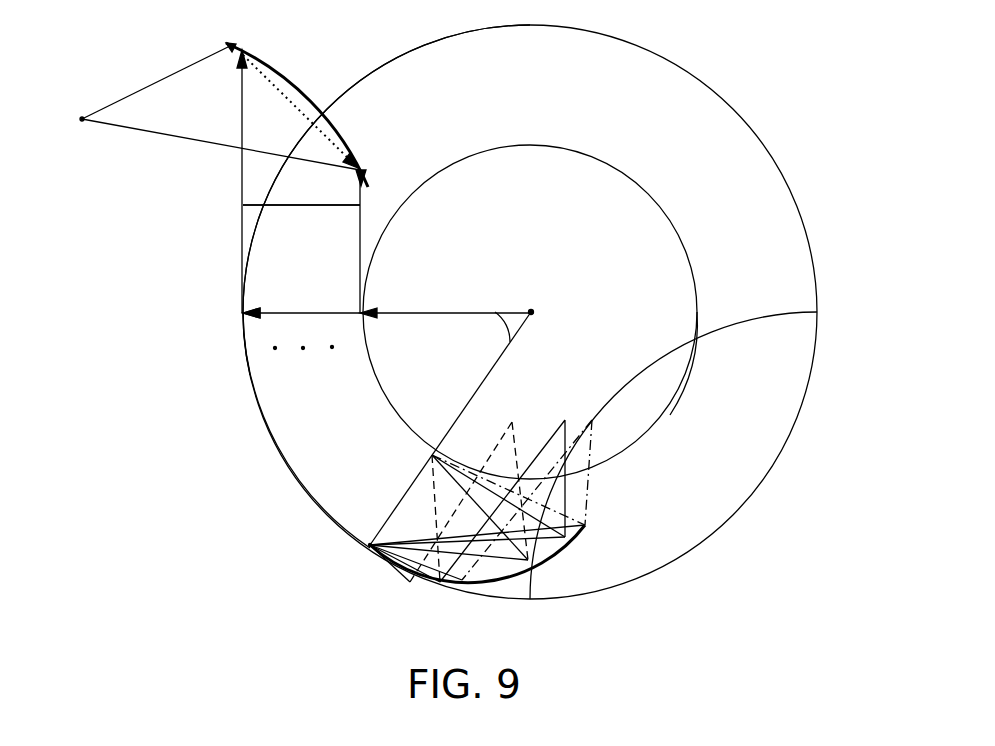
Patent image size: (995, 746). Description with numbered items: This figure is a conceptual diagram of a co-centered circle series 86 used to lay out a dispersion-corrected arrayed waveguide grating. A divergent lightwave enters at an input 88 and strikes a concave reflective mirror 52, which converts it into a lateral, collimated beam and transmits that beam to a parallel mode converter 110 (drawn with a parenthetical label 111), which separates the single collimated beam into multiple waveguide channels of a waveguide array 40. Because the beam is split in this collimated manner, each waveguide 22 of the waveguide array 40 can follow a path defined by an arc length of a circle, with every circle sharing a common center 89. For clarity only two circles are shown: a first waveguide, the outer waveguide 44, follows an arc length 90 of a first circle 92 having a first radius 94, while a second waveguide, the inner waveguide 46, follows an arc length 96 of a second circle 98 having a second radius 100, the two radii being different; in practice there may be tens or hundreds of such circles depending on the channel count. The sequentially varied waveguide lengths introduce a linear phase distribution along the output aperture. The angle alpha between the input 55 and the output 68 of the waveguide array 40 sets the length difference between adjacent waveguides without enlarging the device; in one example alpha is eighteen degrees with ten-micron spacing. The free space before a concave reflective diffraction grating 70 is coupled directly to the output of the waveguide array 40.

The waveguide 22 is at (270, 482).
The waveguide array 40 is at (304, 371).
The outer waveguide 44 is at (272, 443).
The inner waveguide 46 is at (397, 420).
The concave reflective mirror 52 is at (272, 68).
The input 55 is at (243, 313).
The output 68 is at (370, 545).
The concave reflective diffraction grating 70 is at (550, 556).
The co-centered circle series 86 is at (742, 90).
The input 88 is at (82, 119).
The common center 89 is at (531, 312).
The arc length 90 is at (243, 335).
The first circle 92 is at (724, 526).
The first radius 94 is at (285, 312).
The arc length 96 is at (372, 368).
The second circle 98 is at (670, 415).
The second radius 100 is at (425, 312).
The parallel mode converter 110 is at (301, 229).
The crystal plane 111 is at (301, 229).